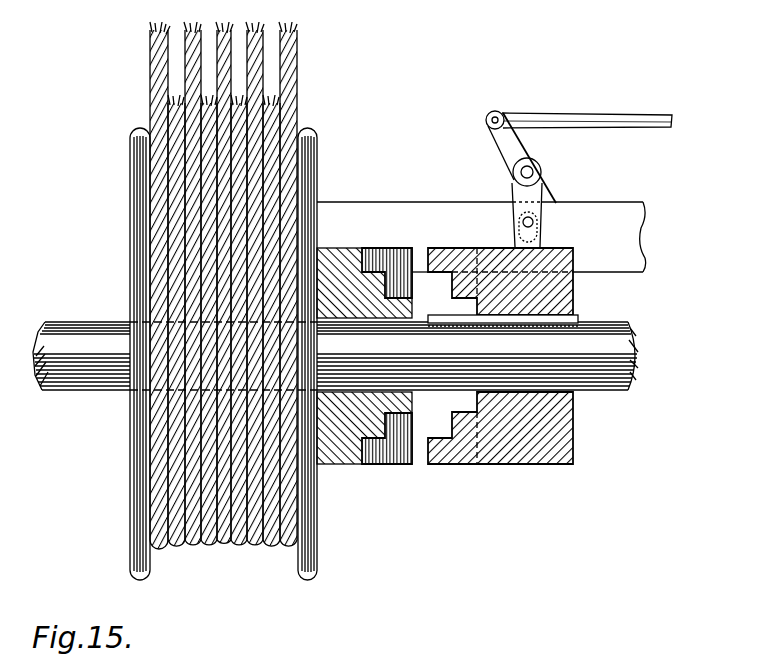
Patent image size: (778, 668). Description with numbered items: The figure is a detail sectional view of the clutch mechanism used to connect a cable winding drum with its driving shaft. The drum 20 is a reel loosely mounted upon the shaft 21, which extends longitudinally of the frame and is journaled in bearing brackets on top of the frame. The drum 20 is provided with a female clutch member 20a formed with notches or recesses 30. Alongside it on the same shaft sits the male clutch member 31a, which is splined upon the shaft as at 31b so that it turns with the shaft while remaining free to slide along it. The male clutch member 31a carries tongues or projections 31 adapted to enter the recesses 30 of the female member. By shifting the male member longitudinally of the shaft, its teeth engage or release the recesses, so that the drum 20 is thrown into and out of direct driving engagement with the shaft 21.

The drum 20 is at (133, 175).
The shaft 21 is at (92, 390).
The female clutch member 20a is at (343, 463).
The notches or recesses 30 is at (389, 253).
The tongues or projections 31 is at (453, 251).
The male clutch member 31a is at (521, 458).
The spline 31b is at (578, 318).